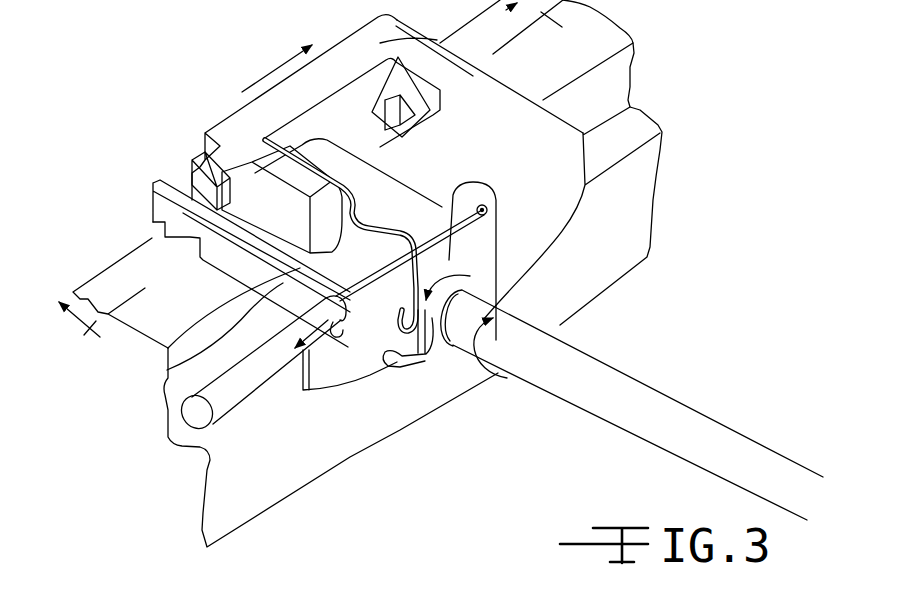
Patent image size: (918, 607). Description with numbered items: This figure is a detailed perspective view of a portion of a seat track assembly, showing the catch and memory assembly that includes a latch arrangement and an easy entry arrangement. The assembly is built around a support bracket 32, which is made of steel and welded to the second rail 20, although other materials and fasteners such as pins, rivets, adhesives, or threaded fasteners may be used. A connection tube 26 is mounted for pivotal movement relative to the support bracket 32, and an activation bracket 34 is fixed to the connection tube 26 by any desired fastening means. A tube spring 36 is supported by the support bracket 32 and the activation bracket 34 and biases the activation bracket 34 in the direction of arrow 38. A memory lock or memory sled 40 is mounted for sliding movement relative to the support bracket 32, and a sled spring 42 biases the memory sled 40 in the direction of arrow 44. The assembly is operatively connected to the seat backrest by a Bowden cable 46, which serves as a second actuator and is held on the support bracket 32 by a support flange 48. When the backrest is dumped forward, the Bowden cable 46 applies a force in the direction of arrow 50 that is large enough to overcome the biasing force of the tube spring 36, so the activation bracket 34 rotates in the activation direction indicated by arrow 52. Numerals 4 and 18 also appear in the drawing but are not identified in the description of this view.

The direction arrow 4 is at (68, 307).
The mounting bracket 18 is at (270, 463).
The second rail 20 is at (143, 273).
The connection tube 26 is at (667, 393).
The support bracket 32 is at (533, 140).
The activation bracket 34 is at (483, 278).
The tube spring 36 is at (432, 357).
The arrow 38 is at (496, 360).
The memory sled 40 is at (247, 122).
The sled spring 42 is at (197, 173).
The arrow 44 is at (277, 56).
The Bowden cable 46 is at (227, 390).
The support flange 48 is at (167, 370).
The arrow 50 is at (292, 345).
The arrow 52 is at (380, 240).